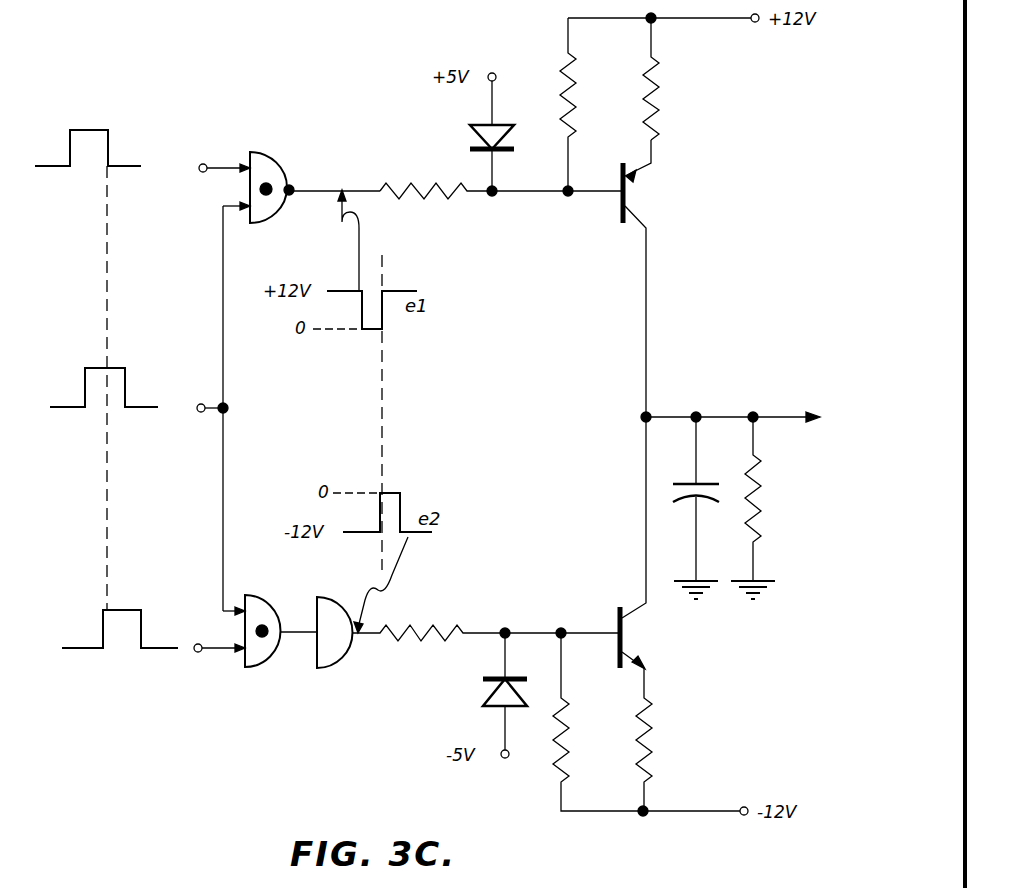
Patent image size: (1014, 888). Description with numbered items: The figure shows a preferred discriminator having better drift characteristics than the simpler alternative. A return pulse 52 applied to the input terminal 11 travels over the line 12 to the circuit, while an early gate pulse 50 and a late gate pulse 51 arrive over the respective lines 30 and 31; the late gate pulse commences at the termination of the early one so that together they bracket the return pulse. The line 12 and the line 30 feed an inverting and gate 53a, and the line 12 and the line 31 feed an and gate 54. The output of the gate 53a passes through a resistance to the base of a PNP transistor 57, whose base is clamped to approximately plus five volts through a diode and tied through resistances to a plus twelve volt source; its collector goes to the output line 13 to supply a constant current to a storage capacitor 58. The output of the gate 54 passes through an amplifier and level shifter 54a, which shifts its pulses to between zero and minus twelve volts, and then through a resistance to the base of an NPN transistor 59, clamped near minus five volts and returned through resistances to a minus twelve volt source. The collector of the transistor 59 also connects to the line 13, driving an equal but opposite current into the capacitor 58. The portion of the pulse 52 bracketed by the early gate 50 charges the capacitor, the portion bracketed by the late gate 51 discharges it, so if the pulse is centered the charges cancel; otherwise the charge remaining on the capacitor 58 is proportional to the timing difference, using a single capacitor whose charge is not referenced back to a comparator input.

The early gate pulse 50 is at (112, 160).
The late gate pulse 51 is at (143, 623).
The return pulse 52 is at (128, 377).
The input terminal 11 is at (201, 403).
The line 12 is at (208, 419).
The line 30 is at (222, 165).
The line 31 is at (221, 652).
The inverting and gate 53a is at (286, 178).
The and gate 54 is at (250, 668).
The amplifier and level shifter 54a is at (343, 656).
The PNP transistor 57 is at (618, 227).
The storage capacitor 58 is at (689, 483).
The NPN transistor 59 is at (617, 618).
The output line 13 is at (780, 416).